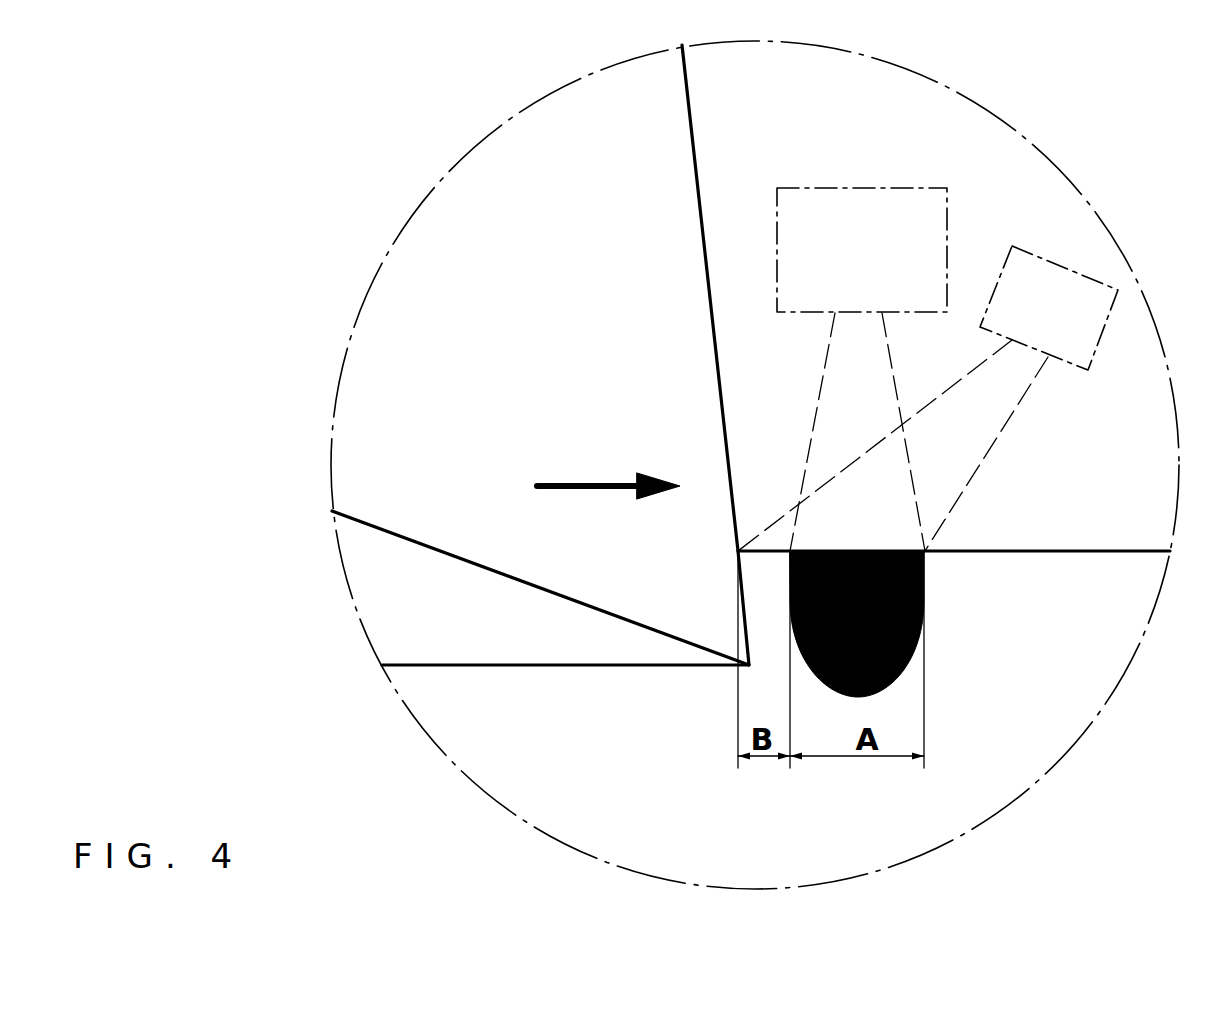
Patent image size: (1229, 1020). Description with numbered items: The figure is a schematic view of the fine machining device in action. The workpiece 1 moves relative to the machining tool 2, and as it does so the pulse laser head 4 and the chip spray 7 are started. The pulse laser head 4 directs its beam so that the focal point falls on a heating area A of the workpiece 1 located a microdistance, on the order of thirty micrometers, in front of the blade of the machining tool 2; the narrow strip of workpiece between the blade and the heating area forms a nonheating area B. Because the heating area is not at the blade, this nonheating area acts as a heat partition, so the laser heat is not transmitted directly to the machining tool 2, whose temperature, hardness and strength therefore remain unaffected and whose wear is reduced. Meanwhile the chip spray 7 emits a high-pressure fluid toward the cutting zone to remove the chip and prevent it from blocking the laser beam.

The workpiece 1 is at (1083, 618).
The machining tool 2 is at (423, 273).
The pulse laser head 4 is at (910, 243).
The chip spray 7 is at (1078, 313).